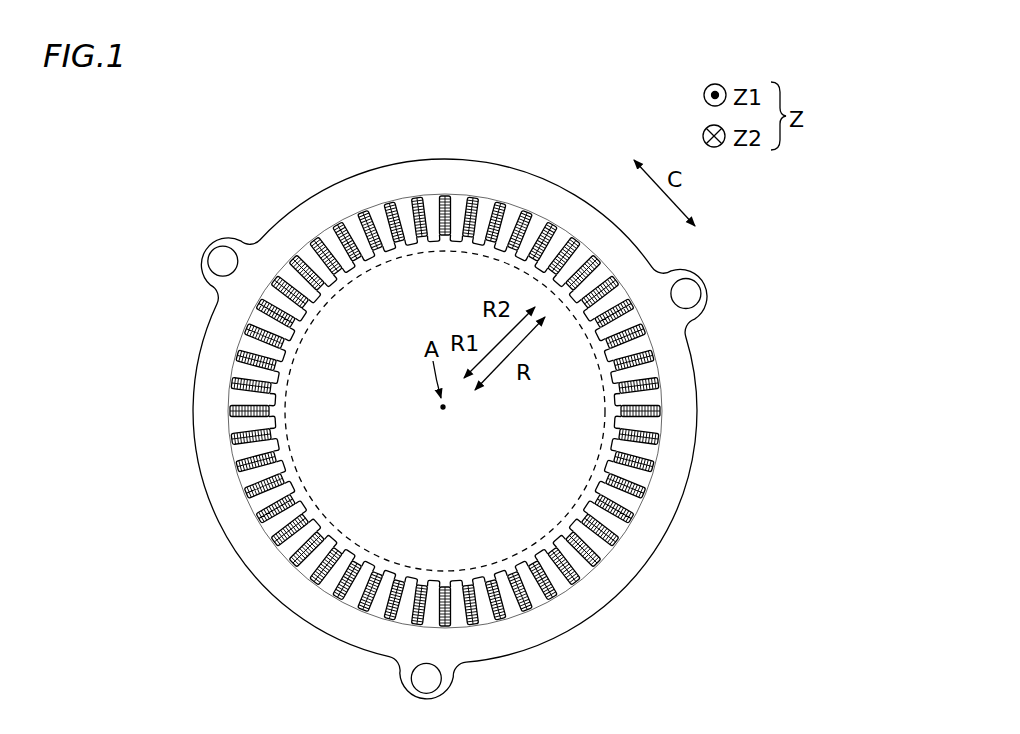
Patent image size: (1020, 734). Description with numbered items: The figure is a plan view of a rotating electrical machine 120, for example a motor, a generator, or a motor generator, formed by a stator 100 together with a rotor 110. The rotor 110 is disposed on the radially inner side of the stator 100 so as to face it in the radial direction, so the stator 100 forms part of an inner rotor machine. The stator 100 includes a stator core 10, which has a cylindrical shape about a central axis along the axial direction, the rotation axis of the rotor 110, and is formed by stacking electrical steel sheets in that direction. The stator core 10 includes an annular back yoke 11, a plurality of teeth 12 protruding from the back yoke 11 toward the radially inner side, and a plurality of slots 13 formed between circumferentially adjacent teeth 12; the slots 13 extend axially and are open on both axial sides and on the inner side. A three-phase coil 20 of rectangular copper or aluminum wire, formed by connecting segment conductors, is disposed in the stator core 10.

The stator core 10 is at (382, 164).
The back yoke 11 is at (414, 169).
The teeth 12 is at (461, 207).
The slots 13 is at (483, 203).
The coil 20 is at (498, 210).
The stator 100 is at (305, 129).
The rotor 110 is at (479, 576).
The rotating electrical machine 120 is at (214, 110).